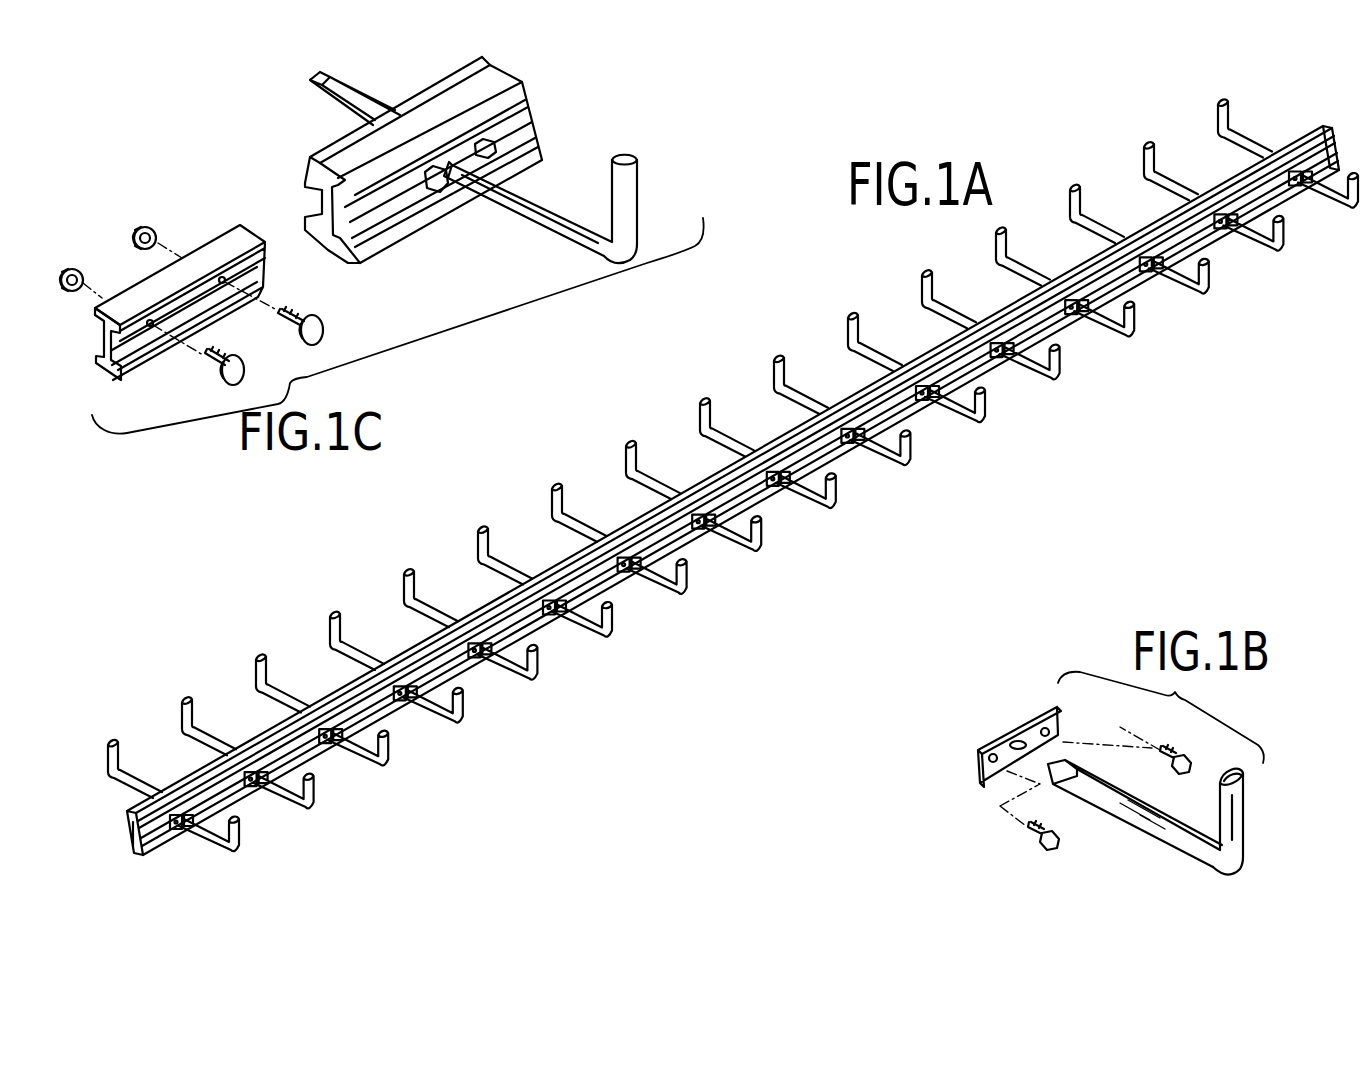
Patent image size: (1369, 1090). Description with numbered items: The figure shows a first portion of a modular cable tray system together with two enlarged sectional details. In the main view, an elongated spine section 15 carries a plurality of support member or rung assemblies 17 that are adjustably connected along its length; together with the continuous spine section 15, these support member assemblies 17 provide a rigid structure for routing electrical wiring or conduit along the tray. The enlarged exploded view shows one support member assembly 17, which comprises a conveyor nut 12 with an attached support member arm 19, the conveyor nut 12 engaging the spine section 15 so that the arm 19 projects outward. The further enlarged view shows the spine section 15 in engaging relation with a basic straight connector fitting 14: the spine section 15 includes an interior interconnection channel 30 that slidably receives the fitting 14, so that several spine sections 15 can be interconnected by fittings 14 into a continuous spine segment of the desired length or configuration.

In FIG. 1B, the conveyor nut 12 is at (1007, 730).
In FIG. 1C, the straight connector fitting 14 is at (98, 313).
In FIG. 1A, the spine section 15 is at (843, 462).
In FIG. 1C, the spine section 15 is at (523, 83).
In FIG. 1A, the support member assembly 17 is at (494, 718).
In FIG. 1B, the support member assembly 17 is at (1130, 870).
In FIG. 1B, the support member arm 19 is at (1248, 822).
In FIG. 1C, the interior interconnection channel 30 is at (327, 250).